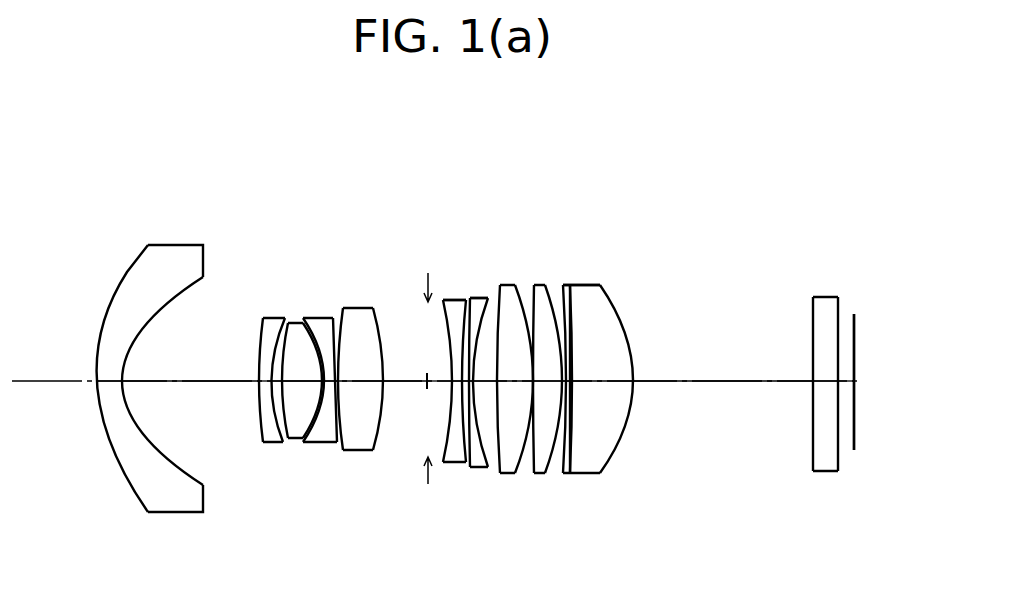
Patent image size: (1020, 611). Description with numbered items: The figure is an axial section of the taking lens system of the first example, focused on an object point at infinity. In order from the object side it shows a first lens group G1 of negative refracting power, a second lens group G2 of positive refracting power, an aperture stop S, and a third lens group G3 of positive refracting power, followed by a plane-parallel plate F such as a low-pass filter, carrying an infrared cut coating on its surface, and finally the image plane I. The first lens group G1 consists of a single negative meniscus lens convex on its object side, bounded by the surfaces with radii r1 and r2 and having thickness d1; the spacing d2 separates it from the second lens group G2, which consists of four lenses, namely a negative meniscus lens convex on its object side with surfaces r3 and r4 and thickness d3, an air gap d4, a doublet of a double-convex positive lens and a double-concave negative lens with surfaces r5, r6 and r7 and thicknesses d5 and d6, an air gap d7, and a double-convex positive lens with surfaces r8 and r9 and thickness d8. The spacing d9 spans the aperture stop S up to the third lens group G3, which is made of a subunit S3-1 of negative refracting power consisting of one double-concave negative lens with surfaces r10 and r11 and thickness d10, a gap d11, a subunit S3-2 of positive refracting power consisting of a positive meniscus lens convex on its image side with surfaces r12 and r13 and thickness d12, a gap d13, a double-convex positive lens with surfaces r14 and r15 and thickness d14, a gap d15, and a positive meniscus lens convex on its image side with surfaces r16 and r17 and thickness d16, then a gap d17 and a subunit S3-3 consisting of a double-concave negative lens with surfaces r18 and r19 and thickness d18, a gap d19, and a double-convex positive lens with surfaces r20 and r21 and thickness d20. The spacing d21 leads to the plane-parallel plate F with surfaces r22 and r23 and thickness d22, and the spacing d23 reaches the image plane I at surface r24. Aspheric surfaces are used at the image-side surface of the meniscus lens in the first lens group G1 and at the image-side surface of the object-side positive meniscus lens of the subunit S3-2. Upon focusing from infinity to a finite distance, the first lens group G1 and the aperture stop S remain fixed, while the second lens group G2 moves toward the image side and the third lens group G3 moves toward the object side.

The first lens group G1 is at (203, 147).
The second lens group G2 is at (382, 147).
The third lens group G3 is at (630, 147).
The aperture stop S is at (430, 147).
The subunit of negative refracting power S3-1 is at (465, 197).
The subunit of positive refracting power S3-2 is at (560, 197).
The subunit of negative and positive lenses S3-3 is at (630, 197).
The plane-parallel plate F is at (828, 472).
The image plane I is at (856, 357).
The radius of curvature of lens surface r1 is at (123, 272).
The radius of curvature of lens surface r2 is at (171, 292).
The radius of curvature of lens surface r3 is at (258, 342).
The radius of curvature of lens surface r4 is at (273, 345).
The radius of curvature of lens surface r5 is at (282, 335).
The radius of curvature of lens surface r6 is at (310, 335).
The radius of curvature of lens surface r7 is at (332, 335).
The radius of curvature of lens surface r8 is at (341, 330).
The radius of curvature of lens surface r9 is at (386, 330).
The radius of curvature of lens surface r10 is at (415, 300).
The radius of curvature of lens surface r11 is at (462, 305).
The radius of curvature of lens surface r12 is at (470, 300).
The radius of curvature of lens surface r13 is at (485, 302).
The radius of curvature of lens surface r14 is at (497, 300).
The radius of curvature of lens surface r15 is at (514, 290).
The radius of curvature of lens surface r16 is at (531, 300).
The radius of curvature of lens surface r17 is at (550, 300).
The radius of curvature of lens surface r18 is at (562, 300).
The radius of curvature of lens surface r19 is at (570, 300).
The radius of curvature of lens surface r20 is at (592, 298).
The radius of curvature of lens surface r21 is at (617, 302).
The radius of curvature of lens surface r22 is at (813, 312).
The radius of curvature of lens surface r23 is at (837, 313).
The radius of curvature of lens surface r24 is at (856, 327).
The spacing between adjacent lens surfaces d1 is at (110, 386).
The spacing between adjacent lens surfaces d2 is at (190, 400).
The spacing between adjacent lens surfaces d3 is at (265, 384).
The spacing between adjacent lens surfaces d4 is at (276, 442).
The spacing between adjacent lens surfaces d5 is at (302, 400).
The spacing between adjacent lens surfaces d6 is at (328, 437).
The spacing between adjacent lens surfaces d7 is at (342, 448).
The spacing between adjacent lens surfaces d8 is at (360, 400).
The spacing between adjacent lens surfaces d9 is at (405, 400).
The spacing between adjacent lens surfaces d10 is at (428, 484).
The spacing between adjacent lens surfaces d11 is at (454, 462).
The spacing between adjacent lens surfaces d12 is at (470, 467).
The spacing between adjacent lens surfaces d13 is at (486, 468).
The spacing between adjacent lens surfaces d14 is at (509, 473).
The spacing between adjacent lens surfaces d15 is at (524, 475).
The spacing between adjacent lens surfaces d16 is at (540, 473).
The spacing between adjacent lens surfaces d17 is at (565, 473).
The spacing between adjacent lens surfaces d18 is at (567, 473).
The spacing between adjacent lens surfaces d19 is at (584, 474).
The spacing between adjacent lens surfaces d20 is at (602, 398).
The spacing between adjacent lens surfaces d21 is at (723, 398).
The spacing between adjacent lens surfaces d22 is at (823, 383).
The spacing between adjacent lens surfaces d23 is at (847, 387).